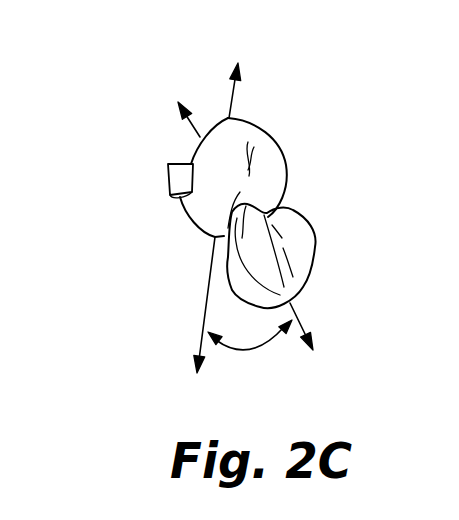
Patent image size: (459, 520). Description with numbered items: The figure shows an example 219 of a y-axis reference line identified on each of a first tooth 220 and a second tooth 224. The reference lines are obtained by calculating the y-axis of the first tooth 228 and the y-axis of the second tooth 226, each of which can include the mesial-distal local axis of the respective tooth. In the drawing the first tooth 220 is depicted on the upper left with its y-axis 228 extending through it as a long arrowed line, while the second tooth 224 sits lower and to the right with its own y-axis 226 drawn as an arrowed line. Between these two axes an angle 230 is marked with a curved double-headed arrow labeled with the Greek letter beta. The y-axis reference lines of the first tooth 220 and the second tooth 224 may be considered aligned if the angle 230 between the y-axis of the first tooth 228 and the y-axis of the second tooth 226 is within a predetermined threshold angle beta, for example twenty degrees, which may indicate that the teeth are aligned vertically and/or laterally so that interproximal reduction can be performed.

The example of y-axis reference lines on a first tooth and a second tooth 219 is at (100, 69).
The first tooth 220 is at (279, 148).
The second tooth 224 is at (314, 230).
The y-axis of the second tooth 226 is at (303, 297).
The y-axis of the first tooth 228 is at (214, 252).
The angle 230 is at (250, 346).